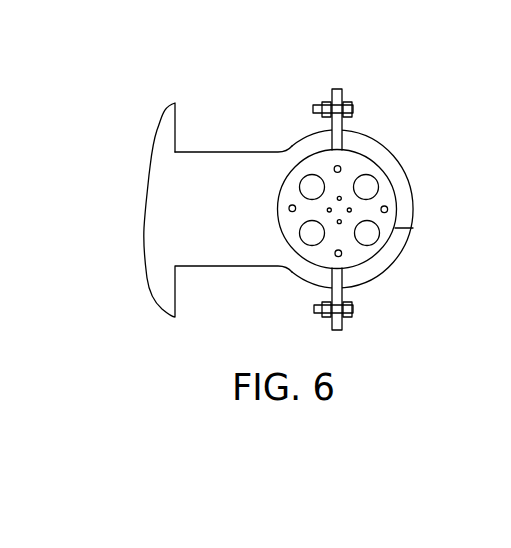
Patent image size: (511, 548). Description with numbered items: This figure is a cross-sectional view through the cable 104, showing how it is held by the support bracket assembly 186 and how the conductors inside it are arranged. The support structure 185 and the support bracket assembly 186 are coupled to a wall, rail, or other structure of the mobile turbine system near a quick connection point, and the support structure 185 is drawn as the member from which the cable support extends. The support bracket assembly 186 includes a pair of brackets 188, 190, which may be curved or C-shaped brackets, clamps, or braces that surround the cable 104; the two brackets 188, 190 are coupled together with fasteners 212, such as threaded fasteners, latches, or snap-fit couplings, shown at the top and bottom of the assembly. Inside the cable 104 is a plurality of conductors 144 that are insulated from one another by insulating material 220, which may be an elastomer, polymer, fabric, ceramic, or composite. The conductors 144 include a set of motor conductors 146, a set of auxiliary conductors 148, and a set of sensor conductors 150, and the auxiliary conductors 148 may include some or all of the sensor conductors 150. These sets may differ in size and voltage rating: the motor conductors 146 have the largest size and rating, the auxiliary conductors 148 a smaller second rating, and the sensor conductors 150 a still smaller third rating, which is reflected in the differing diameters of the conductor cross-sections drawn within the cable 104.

The support structure 185 is at (216, 130).
The support bracket assembly 186 is at (335, 63).
The bracket 188 is at (302, 138).
The bracket 190 is at (383, 143).
The fasteners 212 is at (354, 108).
The insulating material 220 is at (358, 168).
The conductors 144 is at (402, 183).
The cable 104 is at (413, 228).
The set of sensor conductors 150 is at (345, 234).
The set of motor conductors 146 is at (314, 262).
The set of auxiliary conductors 148 is at (283, 218).